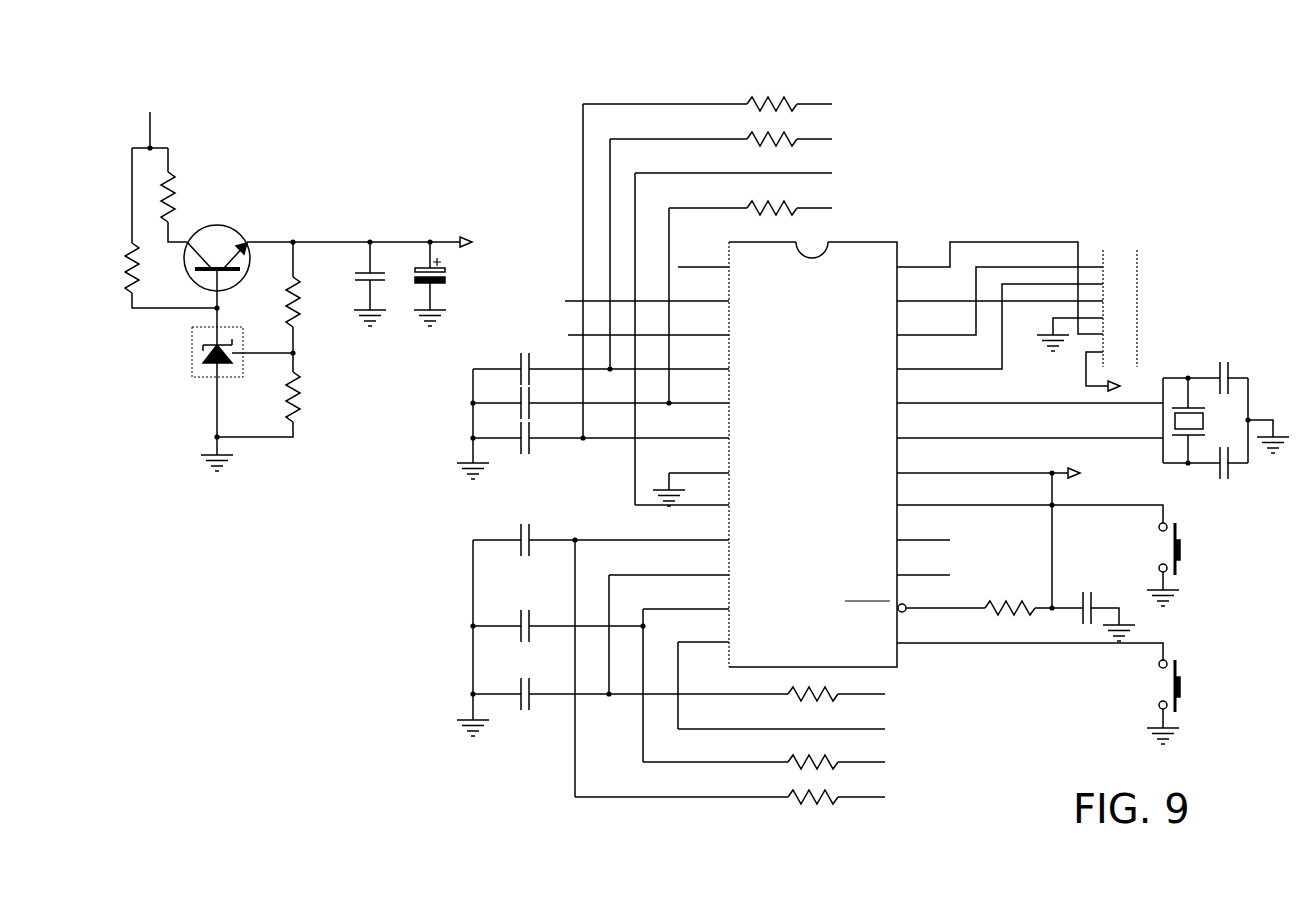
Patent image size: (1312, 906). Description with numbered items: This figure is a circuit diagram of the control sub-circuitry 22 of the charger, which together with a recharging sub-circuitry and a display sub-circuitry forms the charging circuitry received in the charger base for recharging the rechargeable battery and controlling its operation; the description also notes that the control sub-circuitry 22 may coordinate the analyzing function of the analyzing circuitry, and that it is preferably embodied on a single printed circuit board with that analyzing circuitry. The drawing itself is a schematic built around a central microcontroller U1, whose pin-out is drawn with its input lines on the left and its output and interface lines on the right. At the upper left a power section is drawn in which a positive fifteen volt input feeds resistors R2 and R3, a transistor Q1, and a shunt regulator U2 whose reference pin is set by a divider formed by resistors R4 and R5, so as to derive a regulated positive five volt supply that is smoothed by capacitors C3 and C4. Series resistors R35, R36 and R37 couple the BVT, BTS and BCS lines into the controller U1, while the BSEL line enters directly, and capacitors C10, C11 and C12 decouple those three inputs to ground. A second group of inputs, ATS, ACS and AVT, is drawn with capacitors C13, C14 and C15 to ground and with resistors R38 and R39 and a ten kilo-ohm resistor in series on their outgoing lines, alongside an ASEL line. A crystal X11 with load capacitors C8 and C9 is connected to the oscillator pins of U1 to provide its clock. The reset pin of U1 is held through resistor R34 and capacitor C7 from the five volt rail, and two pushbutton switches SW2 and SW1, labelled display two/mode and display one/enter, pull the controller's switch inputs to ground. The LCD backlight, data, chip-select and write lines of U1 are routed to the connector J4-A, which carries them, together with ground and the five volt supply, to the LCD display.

The control sub-circuitry 22 is at (455, 165).
The resistor R2 is at (176, 197).
The resistor R3 4.7K R3 is at (148, 268).
The resistor R4 10K R4 is at (325, 305).
The resistor R5 10K R5 is at (325, 393).
The transistor Q1 is at (217, 249).
The shunt regulator U2 (431) U2 is at (194, 352).
The capacitor C3 0.1uF C3 is at (383, 276).
The capacitor C4 100uF C4 is at (452, 276).
The microcontroller U1 is at (812, 444).
The resistor R35 is at (772, 97).
The resistor R36 is at (772, 132).
The resistor R37 is at (772, 201).
The resistor R38 is at (813, 686).
The resistor R39 is at (813, 754).
The capacitor C10 is at (505, 369).
The capacitor C11 is at (505, 403).
The capacitor C12 is at (505, 438).
The capacitor C13 is at (505, 540).
The capacitor C14 is at (505, 626).
The capacitor C15 is at (505, 694).
The LCD display connector J4-A is at (1159, 291).
The crystal X11 8MHz X11 is at (1211, 420).
The capacitor C8 is at (1236, 378).
The capacitor C9 is at (1236, 469).
The switch SW2 DISPLAY2/MODE SW2 is at (1204, 557).
The switch SW1 DISPLAY1/ENTER SW1 is at (1207, 693).
The resistor R34 is at (1010, 600).
The capacitor C7 is at (1099, 607).